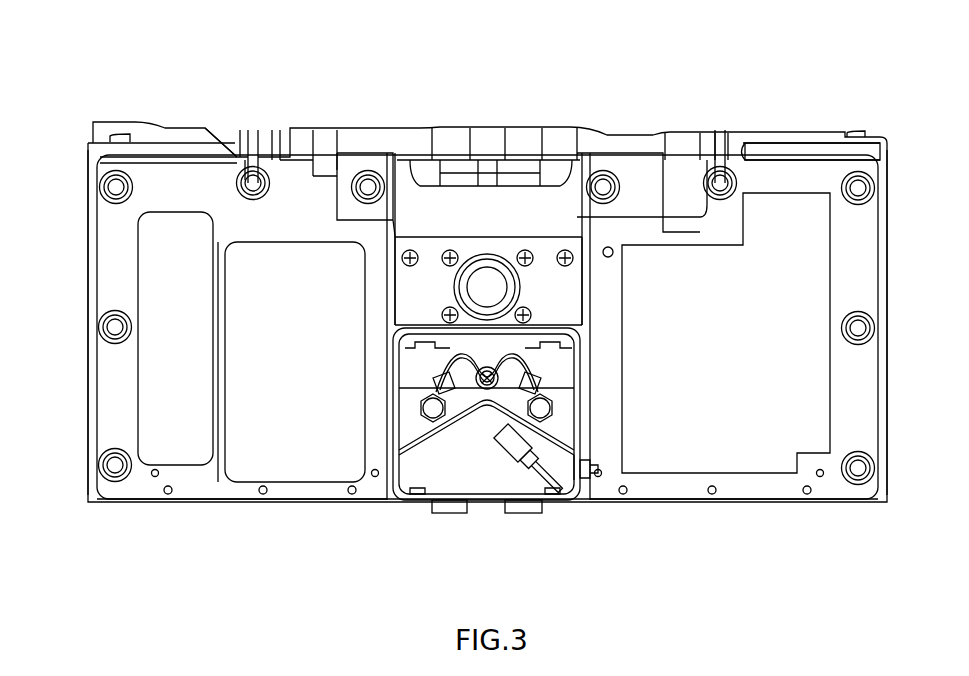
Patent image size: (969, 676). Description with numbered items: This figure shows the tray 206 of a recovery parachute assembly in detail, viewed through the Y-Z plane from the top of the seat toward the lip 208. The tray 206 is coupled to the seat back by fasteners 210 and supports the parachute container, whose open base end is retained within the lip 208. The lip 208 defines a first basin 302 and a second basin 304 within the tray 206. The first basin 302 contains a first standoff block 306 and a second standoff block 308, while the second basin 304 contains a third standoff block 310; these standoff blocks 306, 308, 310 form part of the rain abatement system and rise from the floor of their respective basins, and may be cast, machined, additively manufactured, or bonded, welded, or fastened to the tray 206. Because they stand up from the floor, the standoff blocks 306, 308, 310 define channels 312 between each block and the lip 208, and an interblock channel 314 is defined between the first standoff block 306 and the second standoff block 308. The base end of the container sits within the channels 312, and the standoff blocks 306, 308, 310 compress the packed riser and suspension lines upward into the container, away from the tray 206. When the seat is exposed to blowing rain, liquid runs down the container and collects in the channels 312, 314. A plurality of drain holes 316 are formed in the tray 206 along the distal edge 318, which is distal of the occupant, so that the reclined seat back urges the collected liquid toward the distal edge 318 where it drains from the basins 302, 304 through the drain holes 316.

The tray 206 is at (503, 82).
The lip 208 is at (93, 263).
The fasteners 210 is at (102, 188).
The first basin 302 is at (228, 143).
The second basin 304 is at (790, 142).
The first standoff block 306 is at (175, 338).
The second standoff block 308 is at (295, 362).
The third standoff block 310 is at (726, 333).
The channels 312 is at (110, 393).
The interblock channel 314 is at (222, 305).
The drain holes 316 is at (168, 495).
The distal edge 318 is at (228, 505).